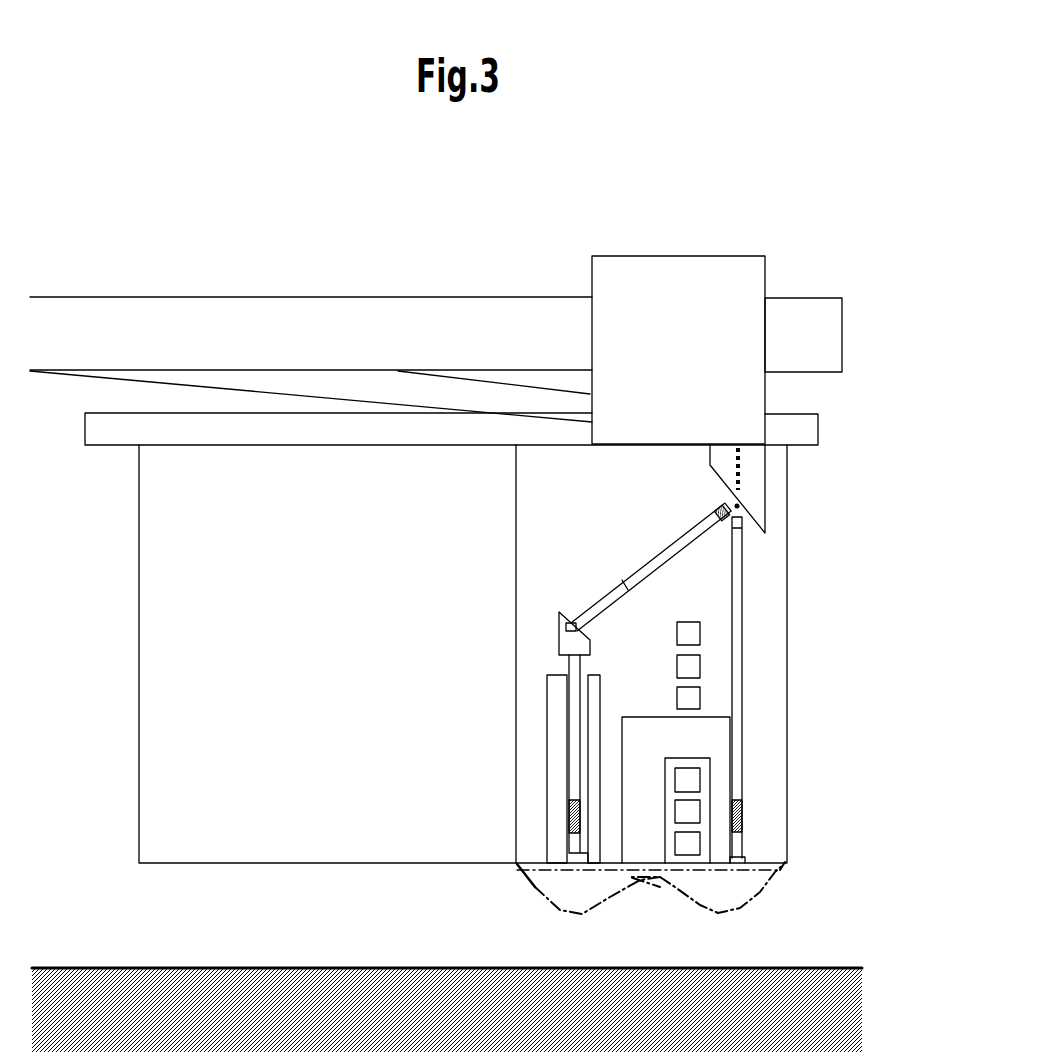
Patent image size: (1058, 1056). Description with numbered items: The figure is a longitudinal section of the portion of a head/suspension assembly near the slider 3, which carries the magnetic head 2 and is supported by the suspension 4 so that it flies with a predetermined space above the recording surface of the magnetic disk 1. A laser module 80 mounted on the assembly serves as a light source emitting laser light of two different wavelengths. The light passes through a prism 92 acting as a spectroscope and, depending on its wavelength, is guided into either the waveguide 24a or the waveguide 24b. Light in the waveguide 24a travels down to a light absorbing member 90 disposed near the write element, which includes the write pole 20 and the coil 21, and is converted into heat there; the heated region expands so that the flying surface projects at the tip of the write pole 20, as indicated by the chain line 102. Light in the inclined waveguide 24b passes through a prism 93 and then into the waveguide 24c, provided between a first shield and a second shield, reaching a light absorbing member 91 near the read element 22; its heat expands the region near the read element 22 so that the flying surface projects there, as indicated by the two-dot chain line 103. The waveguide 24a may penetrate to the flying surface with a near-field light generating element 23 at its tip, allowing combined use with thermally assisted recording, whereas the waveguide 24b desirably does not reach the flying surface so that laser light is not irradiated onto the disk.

The magnetic disk 1 is at (237, 985).
The magnetic head 2 is at (640, 478).
The slider 3 is at (153, 800).
The suspension 4 is at (165, 307).
The write pole 20 is at (720, 753).
The coil 21 is at (688, 695).
The read element 22 is at (552, 870).
The near-field light generating element 23 is at (742, 857).
The waveguide 24a is at (740, 612).
The waveguide 24b is at (625, 585).
The waveguide 24c is at (558, 640).
The laser module 80 is at (660, 273).
The light absorbing member 90 is at (742, 807).
The light absorbing member 91 is at (567, 813).
The prism 92 is at (757, 500).
The prism 93 is at (565, 628).
The chain line 102 is at (747, 903).
The two-dot chain line 103 is at (617, 893).